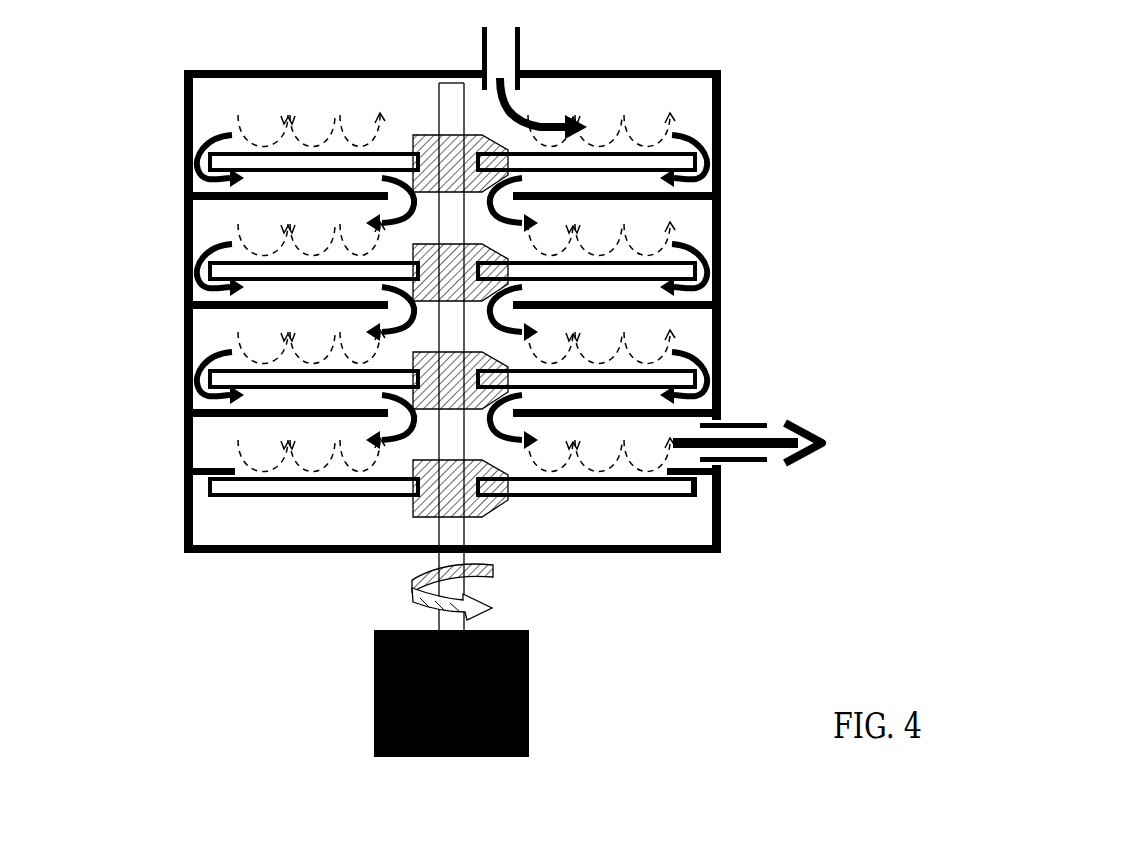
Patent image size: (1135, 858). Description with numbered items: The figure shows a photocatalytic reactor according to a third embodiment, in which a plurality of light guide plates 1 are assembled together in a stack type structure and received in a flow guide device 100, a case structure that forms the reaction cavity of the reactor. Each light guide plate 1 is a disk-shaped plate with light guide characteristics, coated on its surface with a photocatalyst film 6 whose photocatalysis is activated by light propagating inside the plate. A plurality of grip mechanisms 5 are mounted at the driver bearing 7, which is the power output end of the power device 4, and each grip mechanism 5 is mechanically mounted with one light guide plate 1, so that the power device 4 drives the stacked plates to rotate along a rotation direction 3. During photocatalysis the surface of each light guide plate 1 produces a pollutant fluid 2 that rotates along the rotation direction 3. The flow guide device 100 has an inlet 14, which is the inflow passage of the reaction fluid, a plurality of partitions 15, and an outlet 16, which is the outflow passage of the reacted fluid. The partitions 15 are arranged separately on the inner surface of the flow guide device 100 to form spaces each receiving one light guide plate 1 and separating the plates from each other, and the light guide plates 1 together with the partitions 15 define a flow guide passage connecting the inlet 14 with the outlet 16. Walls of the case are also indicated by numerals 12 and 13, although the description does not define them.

The flow guide device 100 is at (722, 120).
The light guide plate 1 is at (645, 500).
The pollutant fluid 2 is at (220, 230).
The rotation direction 3 is at (395, 598).
The power device 4 is at (360, 731).
The grip mechanism 5 is at (395, 517).
The photocatalyst film 6 is at (695, 488).
The driver bearing 7 is at (470, 586).
The housing bottom wall 12 is at (184, 402).
The housing side wall 13 is at (184, 335).
The inlet 14 is at (522, 44).
The partition 15 is at (678, 200).
The outlet 16 is at (730, 462).